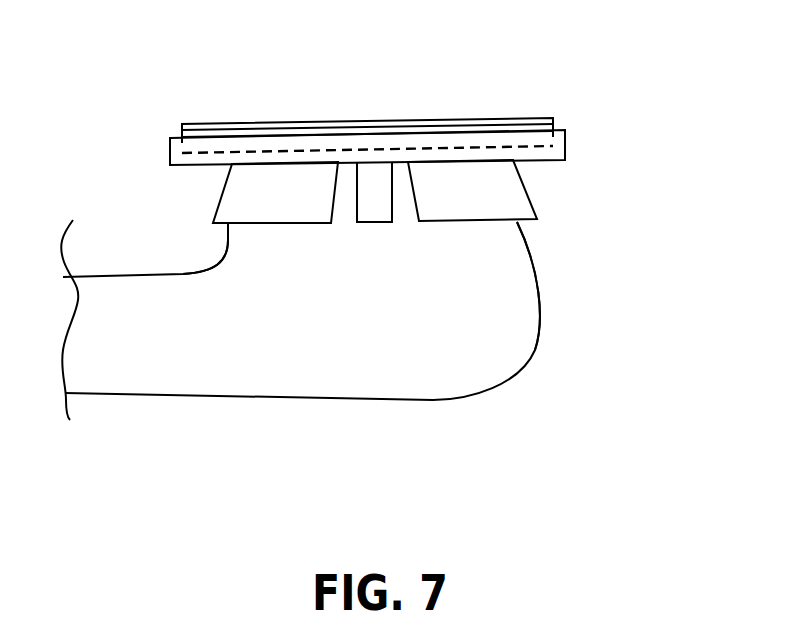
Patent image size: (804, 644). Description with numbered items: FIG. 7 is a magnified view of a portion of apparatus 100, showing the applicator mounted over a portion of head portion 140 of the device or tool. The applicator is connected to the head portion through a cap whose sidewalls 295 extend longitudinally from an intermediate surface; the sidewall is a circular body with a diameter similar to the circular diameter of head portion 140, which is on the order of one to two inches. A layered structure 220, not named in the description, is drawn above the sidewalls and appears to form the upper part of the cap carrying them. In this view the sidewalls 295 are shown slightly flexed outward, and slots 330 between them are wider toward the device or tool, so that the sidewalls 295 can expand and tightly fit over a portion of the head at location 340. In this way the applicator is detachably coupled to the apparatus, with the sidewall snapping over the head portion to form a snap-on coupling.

The apparatus 100 is at (399, 225).
The head portion 140 is at (525, 380).
The transducer member 220 is at (170, 138).
The sidewall 295 is at (365, 212).
The slot 330 is at (397, 217).
The location 340 is at (223, 228).